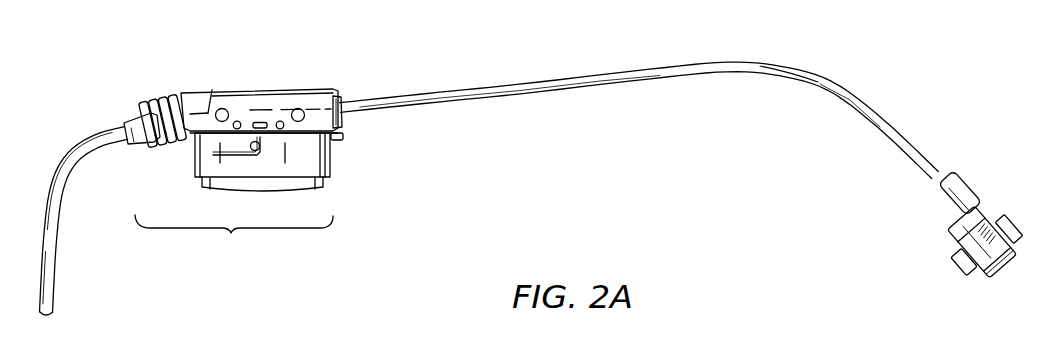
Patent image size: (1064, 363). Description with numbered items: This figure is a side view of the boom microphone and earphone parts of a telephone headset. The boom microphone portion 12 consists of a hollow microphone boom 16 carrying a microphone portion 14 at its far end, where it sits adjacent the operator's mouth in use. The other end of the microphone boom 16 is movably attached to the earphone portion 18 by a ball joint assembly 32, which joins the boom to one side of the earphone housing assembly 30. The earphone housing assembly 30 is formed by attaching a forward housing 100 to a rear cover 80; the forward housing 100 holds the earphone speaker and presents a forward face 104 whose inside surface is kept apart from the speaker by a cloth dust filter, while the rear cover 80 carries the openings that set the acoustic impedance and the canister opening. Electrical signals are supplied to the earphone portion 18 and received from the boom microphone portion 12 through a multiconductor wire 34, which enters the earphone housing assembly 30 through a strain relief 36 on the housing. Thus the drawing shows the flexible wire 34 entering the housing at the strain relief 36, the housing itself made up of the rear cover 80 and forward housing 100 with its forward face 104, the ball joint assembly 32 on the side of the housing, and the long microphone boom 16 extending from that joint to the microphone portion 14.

The boom microphone portion 12 is at (635, 99).
The microphone portion 14 is at (1008, 274).
The microphone boom 16 is at (800, 97).
The earphone portion 18 is at (234, 238).
The earphone housing assembly 30 is at (350, 139).
The ball joint assembly 32 is at (339, 100).
The multiconductor wire 34 is at (57, 267).
The strain relief 36 is at (162, 152).
The rear cover 80 is at (227, 82).
The forward housing 100 is at (339, 174).
The forward face 104 is at (257, 194).